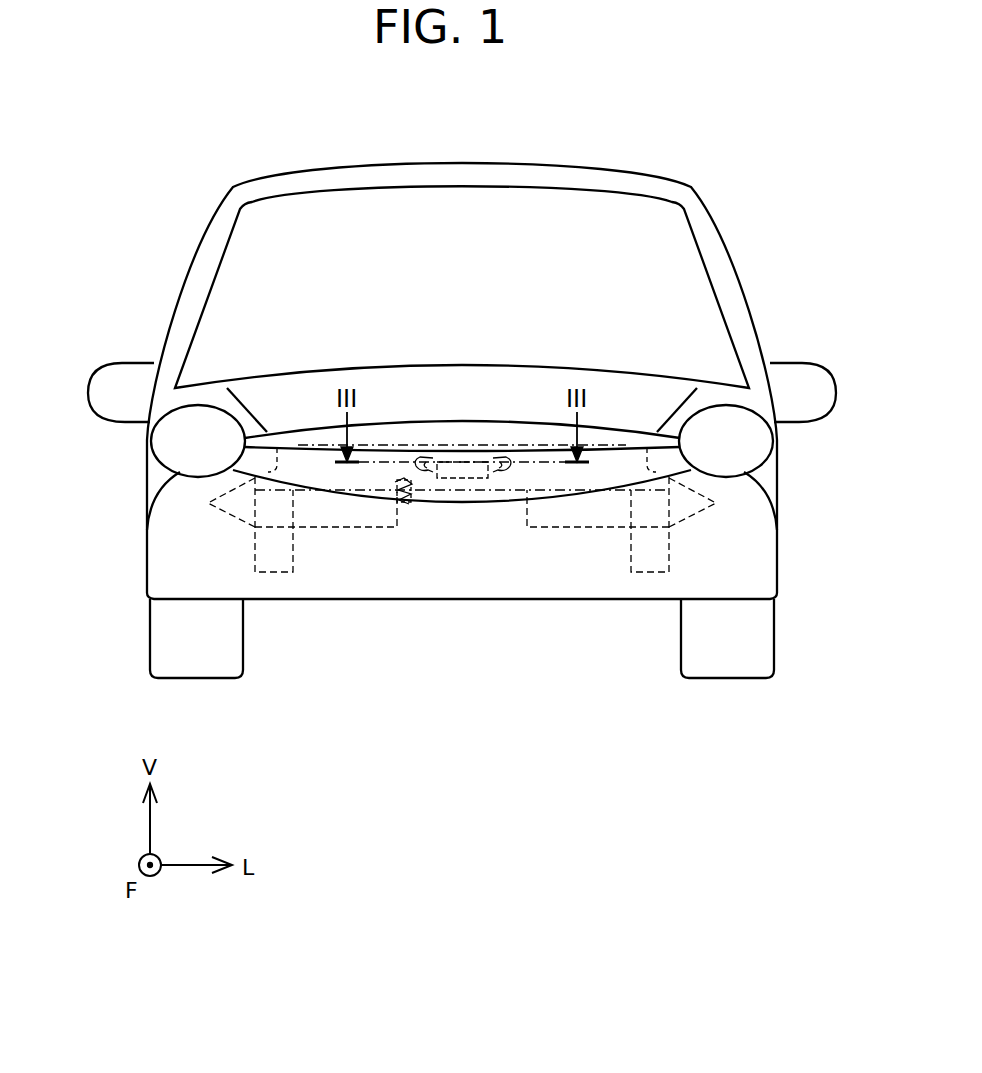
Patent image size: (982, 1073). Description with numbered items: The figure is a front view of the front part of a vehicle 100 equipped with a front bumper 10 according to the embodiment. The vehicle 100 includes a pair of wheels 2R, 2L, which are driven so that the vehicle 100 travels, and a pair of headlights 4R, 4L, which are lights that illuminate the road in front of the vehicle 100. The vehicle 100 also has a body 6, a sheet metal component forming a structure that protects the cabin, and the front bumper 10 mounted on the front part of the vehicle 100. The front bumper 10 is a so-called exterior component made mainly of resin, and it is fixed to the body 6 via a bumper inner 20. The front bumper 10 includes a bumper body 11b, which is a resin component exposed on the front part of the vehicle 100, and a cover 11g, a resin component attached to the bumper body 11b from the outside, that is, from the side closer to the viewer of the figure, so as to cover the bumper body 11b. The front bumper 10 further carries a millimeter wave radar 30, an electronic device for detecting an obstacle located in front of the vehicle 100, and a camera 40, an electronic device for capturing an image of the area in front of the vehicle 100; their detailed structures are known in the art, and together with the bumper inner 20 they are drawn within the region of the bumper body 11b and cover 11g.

The vehicle 100 is at (210, 237).
The wheel 2R is at (197, 665).
The wheel 2L is at (727, 665).
The headlight 4R is at (168, 447).
The headlight 4L is at (755, 446).
The body 6 is at (556, 506).
The front bumper 10 is at (462, 597).
The cover 11g is at (312, 468).
The bumper body 11b is at (358, 578).
The bumper inner 20 is at (540, 527).
The millimeter wave radar 30 is at (460, 476).
The camera 40 is at (423, 506).